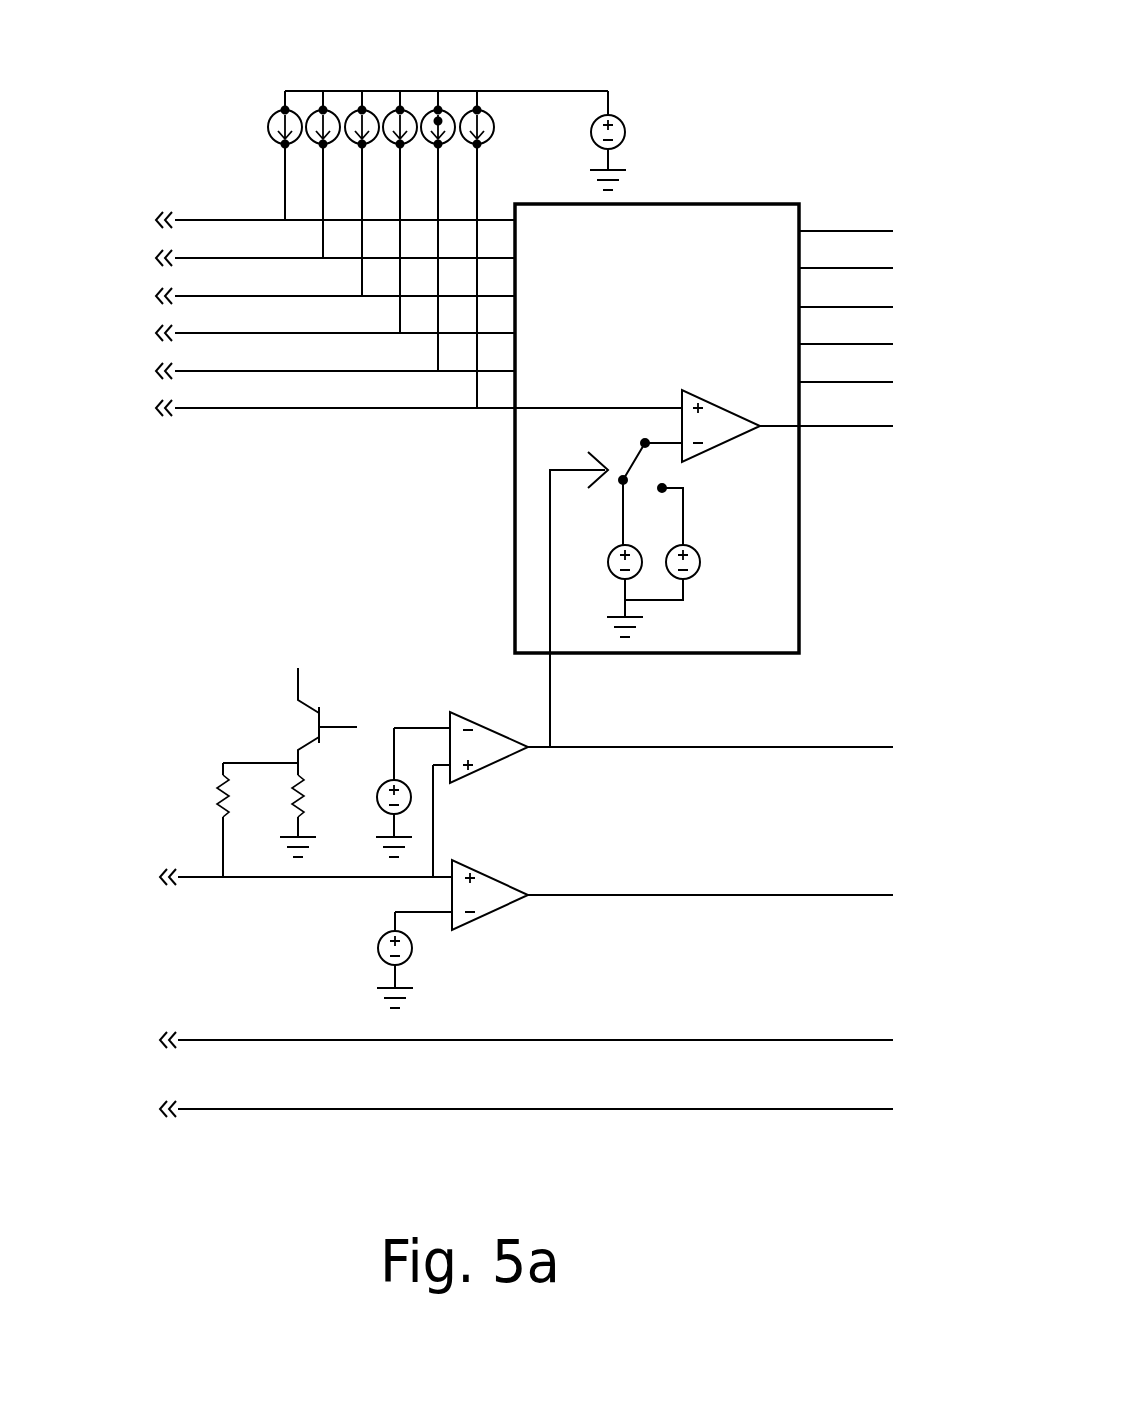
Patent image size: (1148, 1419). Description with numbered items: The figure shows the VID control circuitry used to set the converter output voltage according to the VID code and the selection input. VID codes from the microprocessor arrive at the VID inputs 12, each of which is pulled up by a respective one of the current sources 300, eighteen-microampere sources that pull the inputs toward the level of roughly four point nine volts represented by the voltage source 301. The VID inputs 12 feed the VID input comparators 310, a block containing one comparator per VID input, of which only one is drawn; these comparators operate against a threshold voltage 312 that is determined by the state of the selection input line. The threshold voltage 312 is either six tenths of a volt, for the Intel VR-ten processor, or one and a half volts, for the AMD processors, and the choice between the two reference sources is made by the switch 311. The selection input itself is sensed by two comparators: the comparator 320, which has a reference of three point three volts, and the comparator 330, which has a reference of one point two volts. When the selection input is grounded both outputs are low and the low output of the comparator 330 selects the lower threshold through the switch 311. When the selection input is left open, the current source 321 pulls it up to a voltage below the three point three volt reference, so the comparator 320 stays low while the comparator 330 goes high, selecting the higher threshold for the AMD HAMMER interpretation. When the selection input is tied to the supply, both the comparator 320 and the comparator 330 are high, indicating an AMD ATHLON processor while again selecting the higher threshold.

The VID inputs 12 is at (190, 440).
The current sources 300 is at (415, 91).
The voltage source 301 is at (626, 130).
The VID input comparators 310 is at (745, 230).
The switch 311 is at (532, 455).
The threshold voltage 312 is at (668, 612).
The comparator 320 is at (497, 890).
The current source 321 is at (313, 680).
The comparator 330 is at (470, 712).